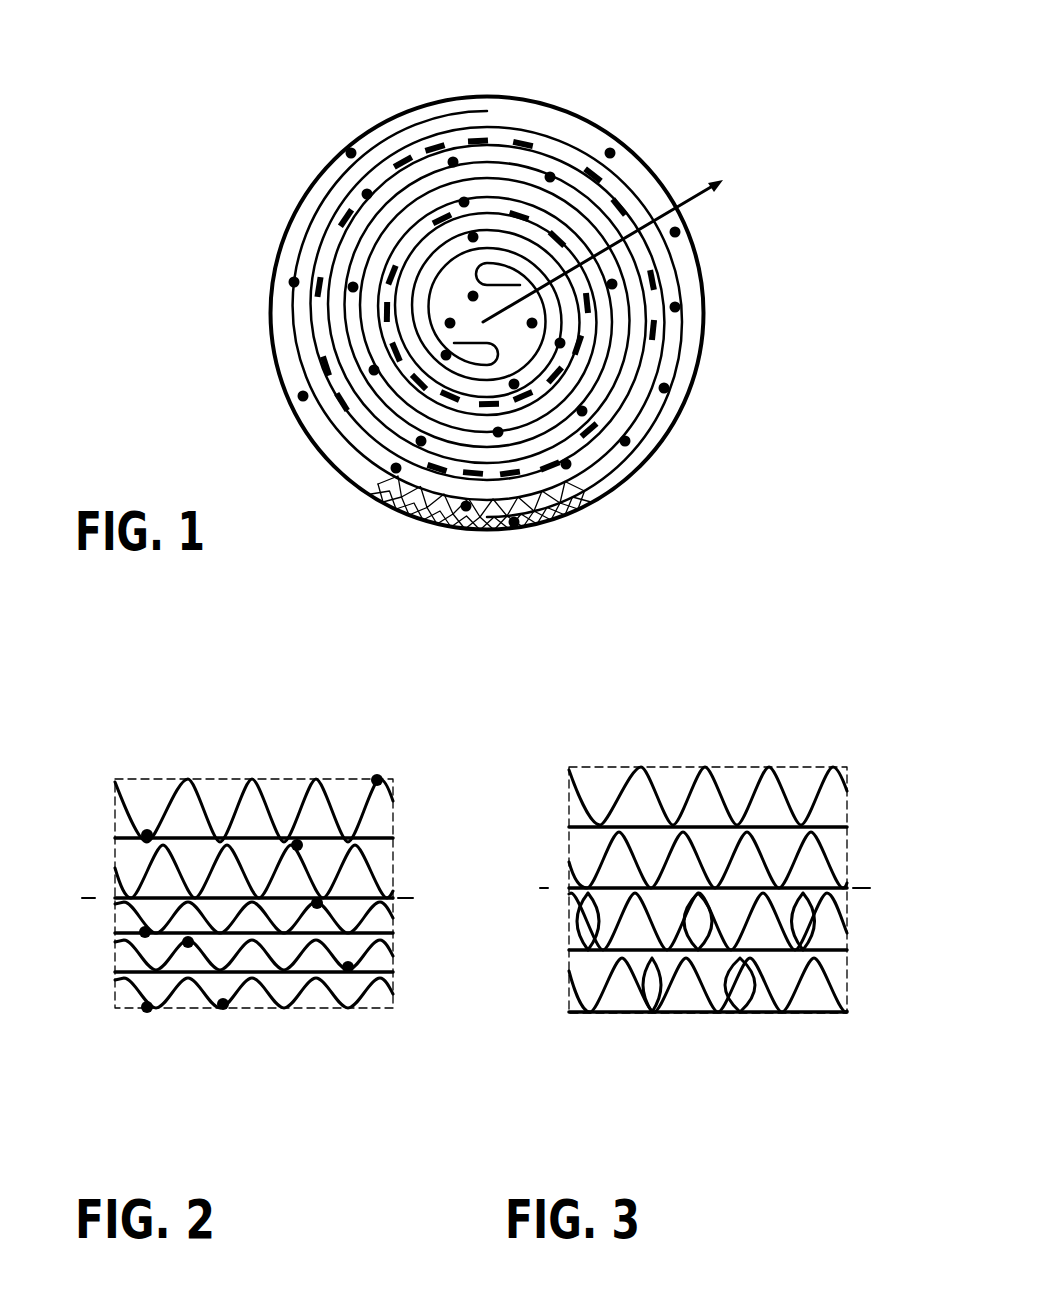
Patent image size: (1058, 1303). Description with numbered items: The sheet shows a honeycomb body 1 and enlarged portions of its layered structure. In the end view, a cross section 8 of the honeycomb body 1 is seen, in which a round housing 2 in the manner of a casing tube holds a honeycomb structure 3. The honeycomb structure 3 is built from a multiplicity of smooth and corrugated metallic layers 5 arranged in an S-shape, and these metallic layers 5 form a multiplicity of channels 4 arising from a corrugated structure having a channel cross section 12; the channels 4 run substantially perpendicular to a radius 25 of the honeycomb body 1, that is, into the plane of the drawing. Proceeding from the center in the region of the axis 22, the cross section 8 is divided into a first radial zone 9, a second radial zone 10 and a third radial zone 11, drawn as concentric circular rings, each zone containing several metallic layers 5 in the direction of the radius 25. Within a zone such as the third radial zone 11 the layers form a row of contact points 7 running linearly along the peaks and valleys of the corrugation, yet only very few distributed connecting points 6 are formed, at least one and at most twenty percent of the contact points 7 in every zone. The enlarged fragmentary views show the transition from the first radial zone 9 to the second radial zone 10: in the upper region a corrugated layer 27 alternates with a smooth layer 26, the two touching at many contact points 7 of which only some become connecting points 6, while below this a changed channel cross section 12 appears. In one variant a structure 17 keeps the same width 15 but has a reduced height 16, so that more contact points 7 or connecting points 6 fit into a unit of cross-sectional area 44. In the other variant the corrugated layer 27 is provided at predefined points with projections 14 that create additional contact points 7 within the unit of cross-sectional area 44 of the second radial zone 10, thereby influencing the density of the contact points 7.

In FIG. 1, the honeycomb body 1 is at (228, 148).
In FIG. 1, the housing 2 is at (367, 130).
In FIG. 1, the honeycomb structure 3 is at (552, 130).
In FIG. 1, the channels 4 is at (563, 480).
In FIG. 1, the metallic layers 5 is at (340, 262).
In FIG. 1, the connecting points 6 is at (290, 282).
In FIG. 2, the connecting points 6 is at (377, 775).
In FIG. 1, the contact points 7 is at (492, 528).
In FIG. 3, the contact points 7 is at (602, 822).
In FIG. 1, the cross section 8 is at (247, 338).
In FIG. 1, the first radial zone 9 is at (547, 322).
In FIG. 2, the first radial zone 9 is at (415, 775).
In FIG. 3, the first radial zone 9 is at (528, 885).
In FIG. 1, the second radial zone 10 is at (620, 358).
In FIG. 2, the second radial zone 10 is at (415, 900).
In FIG. 3, the second radial zone 10 is at (528, 1010).
In FIG. 1, the third radial zone 11 is at (615, 460).
In FIG. 1, the channel cross section 12 is at (606, 487).
In FIG. 2, the channel cross section 12 is at (185, 808).
In FIG. 3, the channel cross section 12 is at (640, 795).
In FIG. 3, the projections 14 is at (627, 1010).
In FIG. 2, the width 15 is at (155, 1010).
In FIG. 2, the height 16 is at (115, 1008).
In FIG. 2, the structure 17 is at (308, 995).
In FIG. 1, the axis 22 is at (490, 322).
In FIG. 1, the radius 25 is at (727, 177).
In FIG. 2, the smooth layer 26 is at (252, 840).
In FIG. 3, the smooth layer 26 is at (707, 822).
In FIG. 2, the corrugated layer 27 is at (333, 800).
In FIG. 3, the corrugated layer 27 is at (787, 792).
In FIG. 2, the unit of cross-sectional area 44 is at (132, 780).
In FIG. 3, the unit of cross-sectional area 44 is at (850, 767).